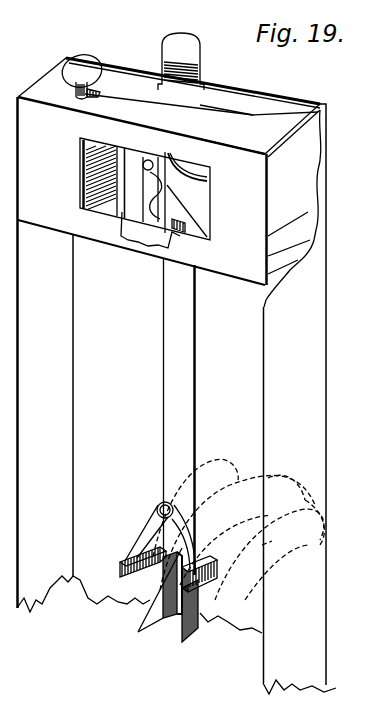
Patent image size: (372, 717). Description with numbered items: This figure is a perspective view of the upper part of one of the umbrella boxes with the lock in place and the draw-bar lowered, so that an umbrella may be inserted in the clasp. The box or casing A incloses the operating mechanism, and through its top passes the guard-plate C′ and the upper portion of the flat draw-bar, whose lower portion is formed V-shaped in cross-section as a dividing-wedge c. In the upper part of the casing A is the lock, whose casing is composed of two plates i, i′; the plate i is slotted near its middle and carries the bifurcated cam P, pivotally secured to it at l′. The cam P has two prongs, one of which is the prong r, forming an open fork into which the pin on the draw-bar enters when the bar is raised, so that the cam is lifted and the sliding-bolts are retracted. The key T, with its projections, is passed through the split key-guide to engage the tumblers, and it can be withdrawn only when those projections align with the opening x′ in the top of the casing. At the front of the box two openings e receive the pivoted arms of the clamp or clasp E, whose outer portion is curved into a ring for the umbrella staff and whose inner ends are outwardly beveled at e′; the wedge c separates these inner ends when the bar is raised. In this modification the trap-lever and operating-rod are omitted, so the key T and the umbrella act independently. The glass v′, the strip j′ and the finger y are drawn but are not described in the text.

The box or casing A is at (313, 104).
The guard-plate C′ is at (181, 304).
The key T is at (90, 61).
The opening in the top of the casing x′ is at (98, 96).
The plate of the lock-casing i is at (226, 112).
The plate of the lock-casing i′ is at (232, 140).
The glass plate v′ is at (80, 180).
The strip j′ is at (129, 183).
The prong of the cam r is at (152, 189).
The bifurcated cam P is at (186, 194).
The pivot of the cam l′ is at (165, 156).
The clamp or clasp E is at (307, 498).
The finger y is at (269, 537).
The openings e is at (141, 539).
The beveled inner portions of the clasp arms e′ is at (124, 567).
The dividing-wedge c is at (151, 621).